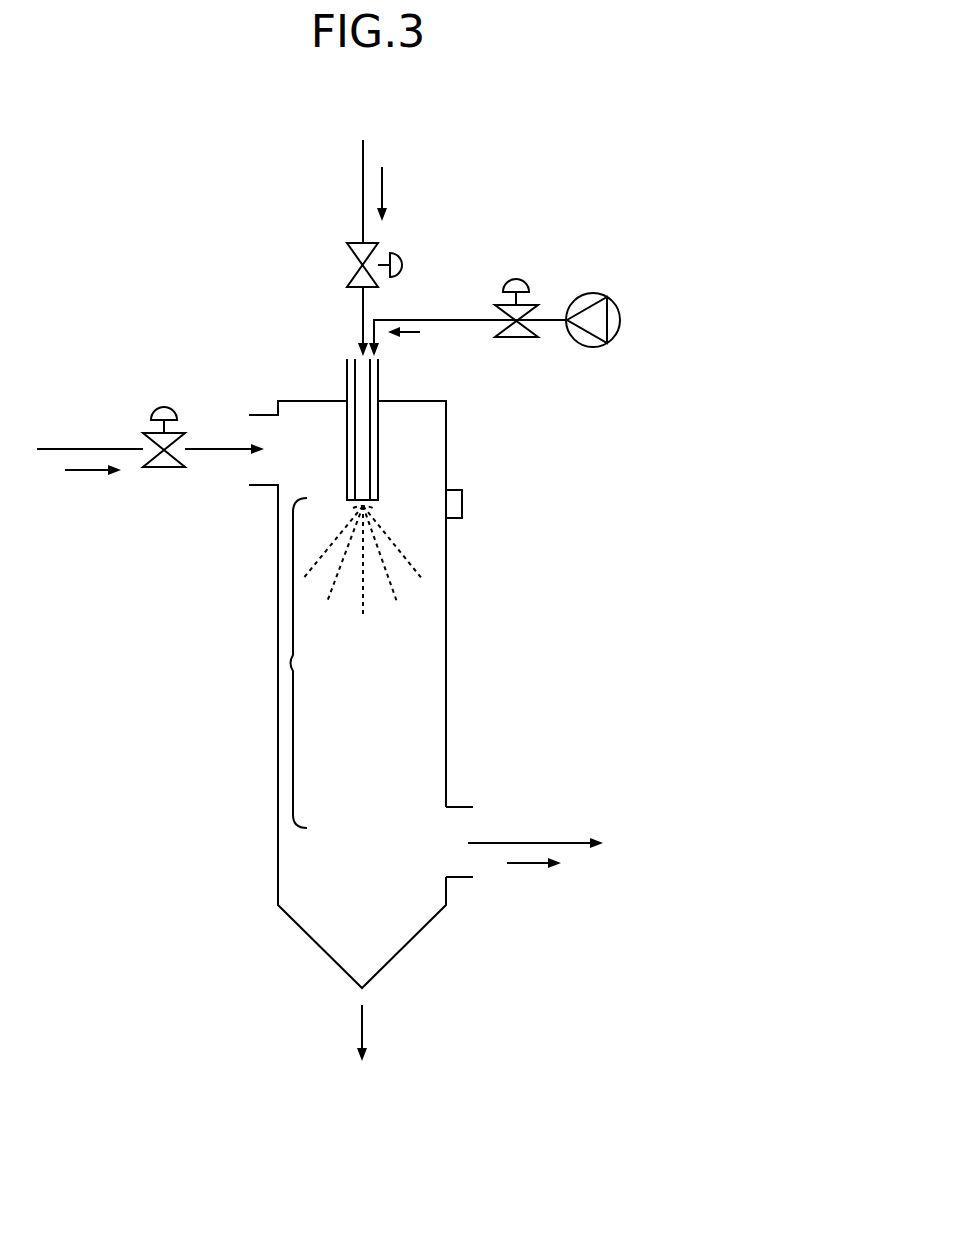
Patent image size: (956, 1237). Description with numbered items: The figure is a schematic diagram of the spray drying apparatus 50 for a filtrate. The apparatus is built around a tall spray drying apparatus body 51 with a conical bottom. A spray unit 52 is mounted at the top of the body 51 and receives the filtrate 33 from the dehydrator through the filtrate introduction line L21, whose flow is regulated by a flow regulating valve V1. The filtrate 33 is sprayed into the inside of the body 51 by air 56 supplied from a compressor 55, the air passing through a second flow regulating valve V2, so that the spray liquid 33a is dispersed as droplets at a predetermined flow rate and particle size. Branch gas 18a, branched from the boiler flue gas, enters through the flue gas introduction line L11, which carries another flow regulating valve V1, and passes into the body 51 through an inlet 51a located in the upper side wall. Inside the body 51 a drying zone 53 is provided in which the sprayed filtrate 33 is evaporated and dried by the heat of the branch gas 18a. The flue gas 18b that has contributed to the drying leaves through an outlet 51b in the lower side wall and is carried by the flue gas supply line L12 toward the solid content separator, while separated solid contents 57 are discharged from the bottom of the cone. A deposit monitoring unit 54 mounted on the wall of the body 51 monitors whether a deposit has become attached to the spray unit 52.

The spray drying apparatus 50 is at (175, 200).
The spray drying apparatus body 51 is at (278, 770).
The inlet 51a is at (262, 416).
The outlet 51b is at (466, 808).
The spray unit 52 is at (370, 445).
The drying zone 53 is at (286, 663).
The deposit monitoring unit 54 is at (462, 502).
The compressor 55 is at (620, 320).
The air 56 is at (408, 338).
The separated solid contents 57 is at (364, 1025).
The filtrate 33 is at (383, 188).
The spray liquid 33a is at (312, 568).
The branch gas 18a is at (89, 476).
The flue gas 18b is at (528, 868).
The flow regulating valve V1 is at (405, 265).
The flow regulating valve V2 is at (516, 280).
The flue gas introduction line L11 is at (73, 449).
The flue gas supply line L12 is at (538, 843).
The filtrate introduction line L21 is at (362, 186).